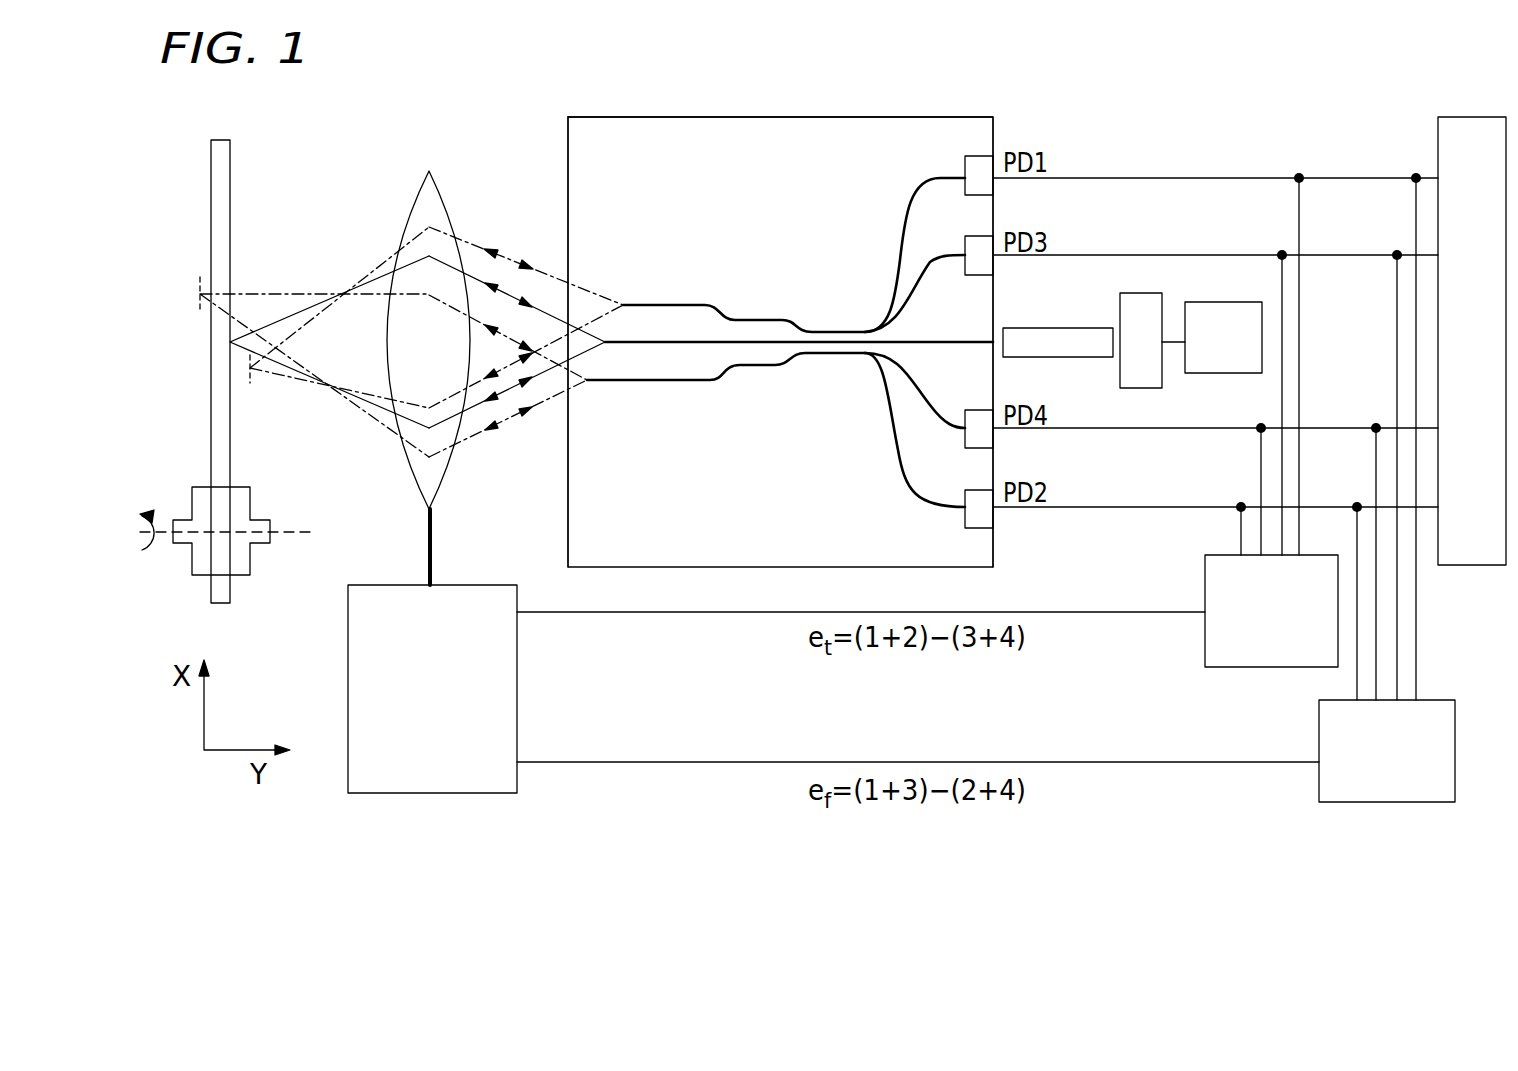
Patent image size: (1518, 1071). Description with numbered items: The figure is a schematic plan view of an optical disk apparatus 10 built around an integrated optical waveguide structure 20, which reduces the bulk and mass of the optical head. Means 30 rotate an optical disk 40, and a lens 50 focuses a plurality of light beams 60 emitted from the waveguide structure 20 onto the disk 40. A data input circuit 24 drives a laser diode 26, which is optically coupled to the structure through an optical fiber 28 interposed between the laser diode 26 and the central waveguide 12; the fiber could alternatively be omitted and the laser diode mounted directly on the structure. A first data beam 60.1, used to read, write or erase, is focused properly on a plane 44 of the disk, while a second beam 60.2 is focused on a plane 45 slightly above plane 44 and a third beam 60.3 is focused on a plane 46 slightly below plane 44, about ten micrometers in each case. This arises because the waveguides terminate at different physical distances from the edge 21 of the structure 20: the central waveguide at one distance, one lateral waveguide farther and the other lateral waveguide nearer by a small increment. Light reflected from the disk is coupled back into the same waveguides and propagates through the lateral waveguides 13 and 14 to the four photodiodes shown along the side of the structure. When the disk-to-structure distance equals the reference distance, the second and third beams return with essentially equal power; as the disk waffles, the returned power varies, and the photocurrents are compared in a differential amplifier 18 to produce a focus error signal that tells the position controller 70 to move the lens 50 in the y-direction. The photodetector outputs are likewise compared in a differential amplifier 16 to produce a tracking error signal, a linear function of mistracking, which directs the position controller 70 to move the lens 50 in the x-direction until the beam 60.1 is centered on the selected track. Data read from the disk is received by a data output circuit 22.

The optical disk apparatus 10 is at (772, 101).
The waveguide 12 is at (980, 326).
The lateral waveguide 13 is at (757, 320).
The lateral waveguide 14 is at (765, 362).
The differential amplifier 16 is at (1205, 650).
The differential amplifier 18 is at (1319, 730).
The integrated optical waveguide structure 20 is at (975, 117).
The edge 21 is at (568, 547).
The data output circuit 22 is at (1477, 566).
The data input circuit 24 is at (1240, 373).
The laser diode 26 is at (1120, 303).
The optical fiber 28 is at (1012, 328).
The means for rotating 30 is at (178, 547).
The optical disk 40 is at (230, 197).
The plane 44 is at (230, 342).
The plane 45 is at (250, 385).
The plane 46 is at (200, 280).
The lens 50 is at (442, 200).
The light beams 60 is at (316, 293).
The first beam 60.1 is at (513, 292).
The second beam 60.2 is at (548, 272).
The third beam 60.3 is at (513, 417).
The position controller 70 is at (517, 690).